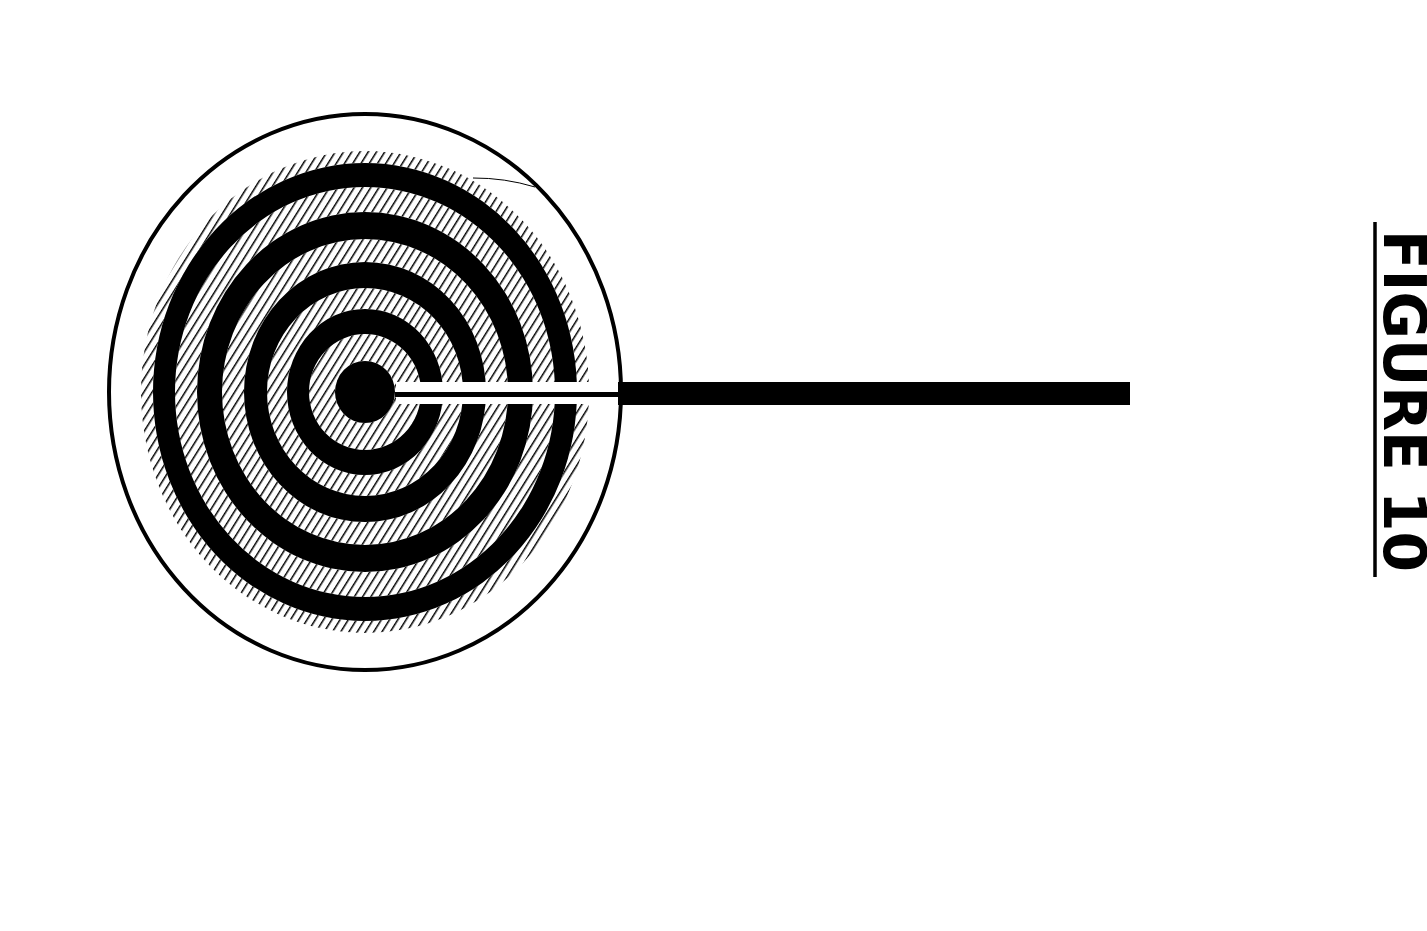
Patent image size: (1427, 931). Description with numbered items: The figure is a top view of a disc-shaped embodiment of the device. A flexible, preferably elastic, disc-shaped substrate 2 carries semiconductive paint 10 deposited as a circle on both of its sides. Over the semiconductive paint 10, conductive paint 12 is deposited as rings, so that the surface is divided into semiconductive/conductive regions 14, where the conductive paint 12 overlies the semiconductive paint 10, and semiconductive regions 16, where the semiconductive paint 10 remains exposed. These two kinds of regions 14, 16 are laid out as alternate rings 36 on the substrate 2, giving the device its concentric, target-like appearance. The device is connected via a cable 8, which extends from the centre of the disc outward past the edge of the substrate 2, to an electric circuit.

The substrate 2 is at (366, 113).
The cable 8 is at (681, 425).
The semiconductive paint 10 is at (641, 451).
The conductive paint 12 is at (612, 449).
The semiconductive/conductive region 14 is at (368, 637).
The semiconductive region 16 is at (310, 623).
The alternate rings 36 is at (473, 178).